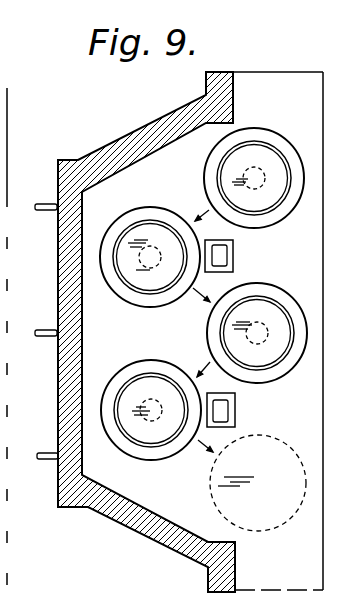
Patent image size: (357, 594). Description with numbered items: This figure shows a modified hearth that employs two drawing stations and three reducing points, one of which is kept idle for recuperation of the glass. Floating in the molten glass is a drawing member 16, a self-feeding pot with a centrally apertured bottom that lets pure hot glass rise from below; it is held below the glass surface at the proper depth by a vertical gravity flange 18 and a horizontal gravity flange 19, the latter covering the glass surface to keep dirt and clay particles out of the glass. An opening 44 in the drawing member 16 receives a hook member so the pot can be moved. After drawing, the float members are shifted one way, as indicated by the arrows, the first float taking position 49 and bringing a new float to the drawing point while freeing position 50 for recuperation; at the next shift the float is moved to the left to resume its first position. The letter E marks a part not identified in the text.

The engine block E is at (0, 355).
The opening 44 is at (58, 264).
The position 50 is at (268, 205).
The drawing member 16 is at (142, 302).
The vertical gravity flange 18 is at (277, 360).
The horizontal gravity flange 19 is at (162, 460).
The position 49 is at (281, 439).